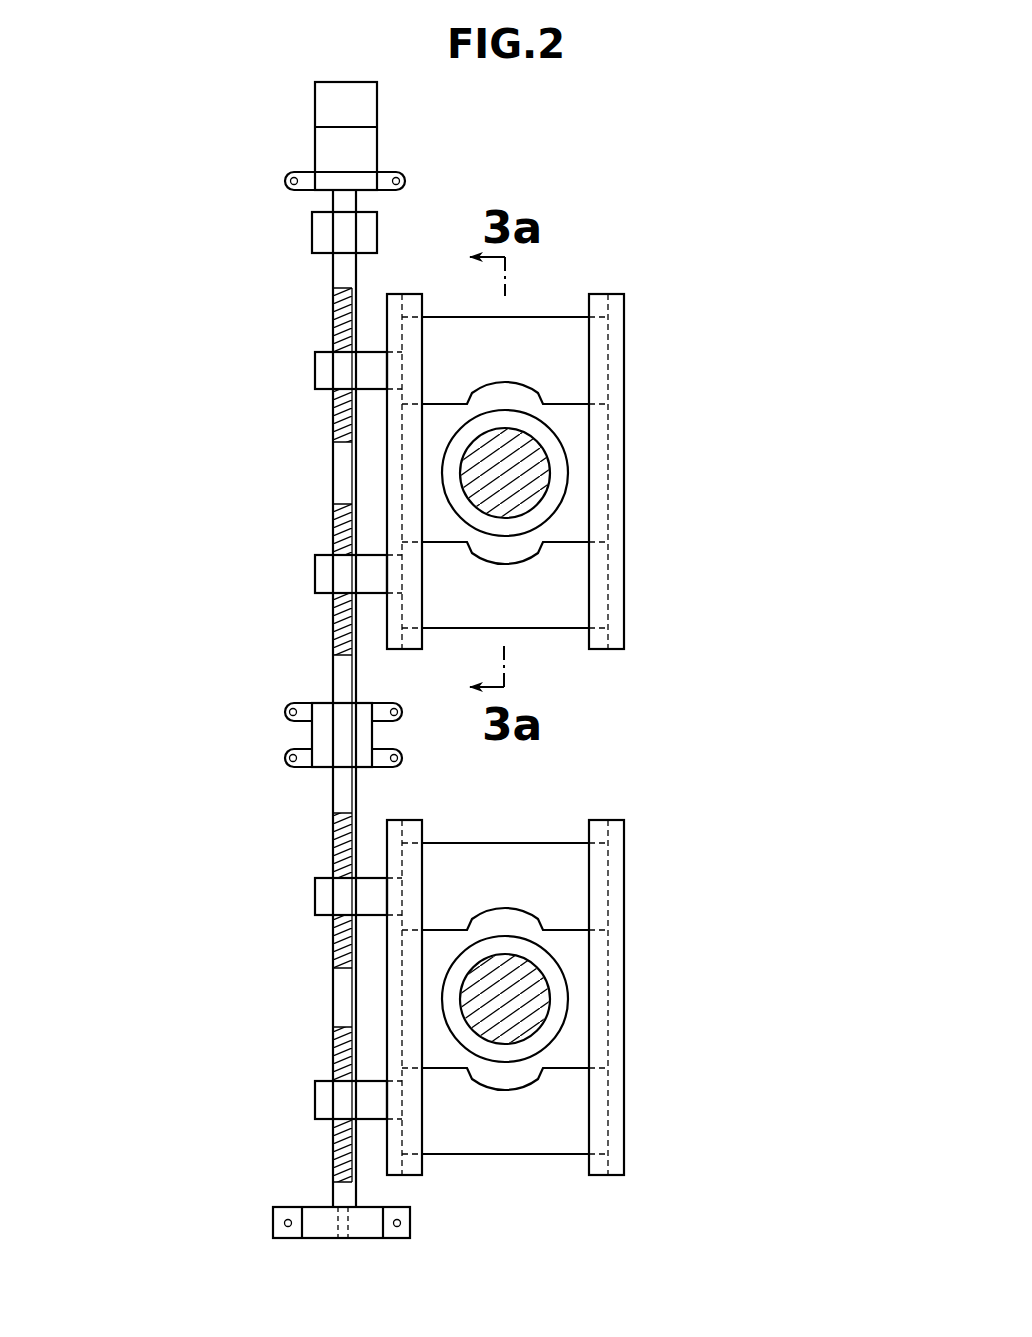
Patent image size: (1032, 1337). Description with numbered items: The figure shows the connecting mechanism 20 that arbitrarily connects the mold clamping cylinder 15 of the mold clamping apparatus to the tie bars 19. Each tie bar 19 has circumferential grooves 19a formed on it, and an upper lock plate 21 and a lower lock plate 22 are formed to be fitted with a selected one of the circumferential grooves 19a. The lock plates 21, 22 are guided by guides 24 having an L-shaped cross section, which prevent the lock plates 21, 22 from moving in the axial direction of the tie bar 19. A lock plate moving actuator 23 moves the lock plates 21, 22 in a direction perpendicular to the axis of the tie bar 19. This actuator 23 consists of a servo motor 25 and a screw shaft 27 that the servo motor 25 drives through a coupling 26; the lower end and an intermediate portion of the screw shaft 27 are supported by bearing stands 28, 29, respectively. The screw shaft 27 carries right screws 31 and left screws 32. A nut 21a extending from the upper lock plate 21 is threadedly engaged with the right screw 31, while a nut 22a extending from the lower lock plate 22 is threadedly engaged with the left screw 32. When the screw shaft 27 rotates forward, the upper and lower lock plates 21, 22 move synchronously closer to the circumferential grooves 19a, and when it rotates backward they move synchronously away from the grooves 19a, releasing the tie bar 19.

The mold clamping cylinder 15 is at (610, 742).
The tie bar 19 is at (535, 470).
The circumferential groove 19a is at (547, 440).
The connecting mechanism 20 is at (710, 210).
The upper lock plate 21 is at (537, 325).
The nut 21a is at (322, 373).
The lower lock plate 22 is at (553, 600).
The nut 22a is at (322, 578).
The lock plate moving actuator 23 is at (279, 104).
The guide 24 is at (405, 302).
The servo motor 25 is at (362, 147).
The coupling 26 is at (318, 235).
The screw shaft 27 is at (340, 478).
The bearing stand 28 is at (325, 1240).
The bearing stand 29 is at (320, 737).
The right screw 31 is at (332, 320).
The left screw 32 is at (335, 627).